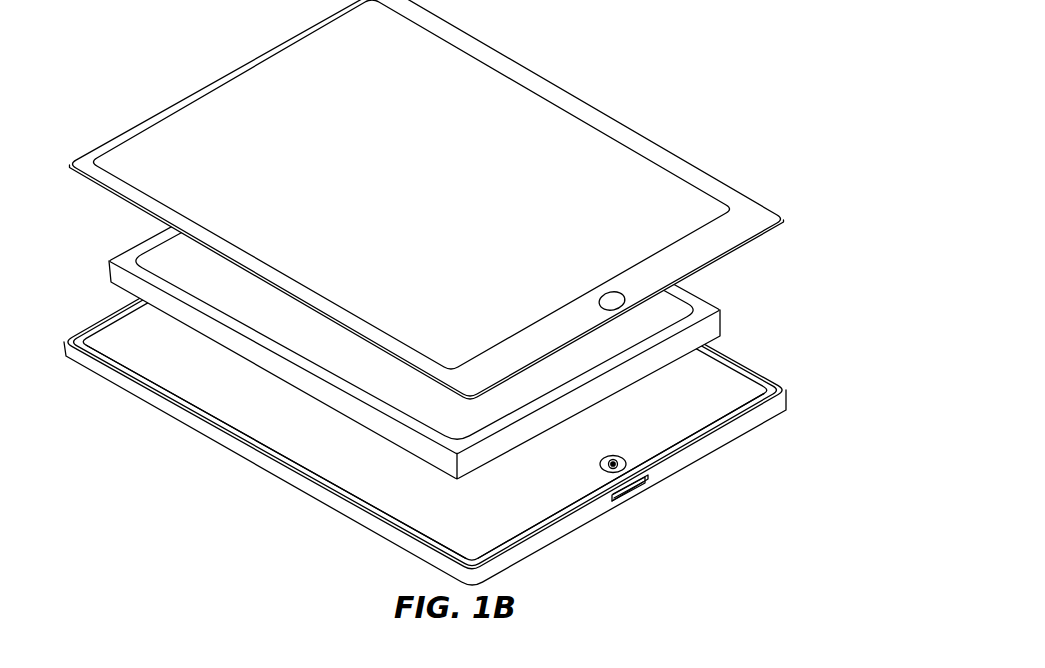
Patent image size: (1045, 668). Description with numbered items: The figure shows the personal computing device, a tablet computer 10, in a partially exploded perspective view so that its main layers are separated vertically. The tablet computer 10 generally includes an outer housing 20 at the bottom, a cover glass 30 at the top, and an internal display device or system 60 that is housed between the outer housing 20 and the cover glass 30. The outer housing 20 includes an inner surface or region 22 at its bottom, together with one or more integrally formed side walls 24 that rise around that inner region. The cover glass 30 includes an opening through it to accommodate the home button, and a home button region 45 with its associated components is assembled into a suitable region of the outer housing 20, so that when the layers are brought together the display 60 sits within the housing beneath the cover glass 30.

The tablet computer 10 is at (423, 292).
The outer housing 20 is at (423, 374).
The inner surface or region 22 is at (425, 451).
The side walls 24 is at (110, 331).
The cover glass 30 is at (118, 192).
The home button region 45 is at (630, 467).
The internal display device or system 60 is at (302, 370).